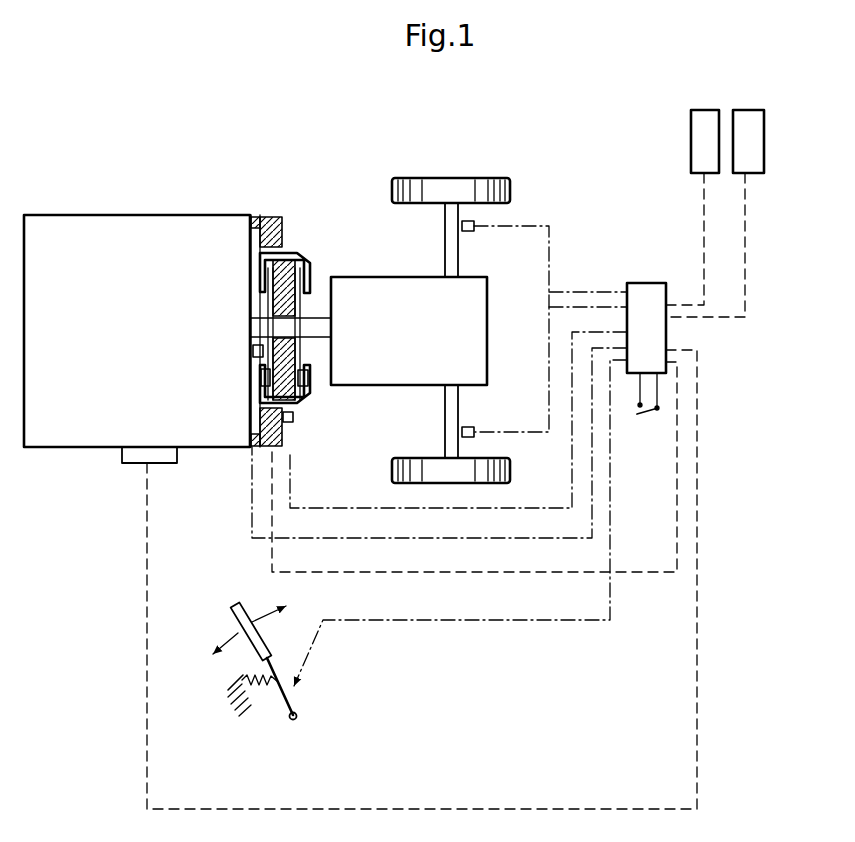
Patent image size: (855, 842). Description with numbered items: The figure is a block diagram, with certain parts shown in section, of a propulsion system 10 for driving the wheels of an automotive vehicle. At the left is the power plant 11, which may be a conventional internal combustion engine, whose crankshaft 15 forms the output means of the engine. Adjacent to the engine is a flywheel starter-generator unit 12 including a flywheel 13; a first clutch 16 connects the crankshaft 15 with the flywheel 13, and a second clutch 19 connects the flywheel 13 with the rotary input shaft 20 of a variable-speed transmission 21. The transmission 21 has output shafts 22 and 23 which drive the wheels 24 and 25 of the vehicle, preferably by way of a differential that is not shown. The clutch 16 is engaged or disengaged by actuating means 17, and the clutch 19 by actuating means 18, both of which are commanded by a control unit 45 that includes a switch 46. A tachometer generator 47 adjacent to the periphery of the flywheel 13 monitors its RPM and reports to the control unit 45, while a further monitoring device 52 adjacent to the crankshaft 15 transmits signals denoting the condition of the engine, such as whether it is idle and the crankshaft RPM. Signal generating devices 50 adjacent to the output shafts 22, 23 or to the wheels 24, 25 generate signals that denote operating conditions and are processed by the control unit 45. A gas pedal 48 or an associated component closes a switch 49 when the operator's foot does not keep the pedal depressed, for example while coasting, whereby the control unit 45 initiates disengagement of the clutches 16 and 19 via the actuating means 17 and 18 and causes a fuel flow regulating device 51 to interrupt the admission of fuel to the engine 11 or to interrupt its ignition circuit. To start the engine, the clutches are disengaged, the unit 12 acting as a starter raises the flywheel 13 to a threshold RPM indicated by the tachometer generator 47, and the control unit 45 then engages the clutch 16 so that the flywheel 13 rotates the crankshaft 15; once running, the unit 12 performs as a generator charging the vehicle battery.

The propulsion system 10 is at (353, 155).
The power plant 11 is at (88, 291).
The flywheel starter-generator unit 12 is at (312, 248).
The flywheel 13 is at (289, 305).
The crankshaft 15 is at (256, 327).
The first clutch 16 is at (262, 378).
The actuating means 17 is at (703, 137).
The actuating means 18 is at (743, 116).
The second clutch 19 is at (308, 384).
The rotary input shaft 20 is at (318, 331).
The variable-speed transmission 21 is at (413, 321).
The output shaft 22 is at (448, 249).
The output shaft 23 is at (448, 409).
The wheel 24 is at (495, 178).
The wheel 25 is at (510, 470).
The control unit 45 is at (633, 336).
The switch 46 is at (645, 416).
The tachometer generator 47 is at (293, 422).
The gas pedal 48 is at (236, 613).
The switch 49 is at (287, 697).
The signal generating device 50 is at (470, 233).
The fuel flow regulating device 51 is at (171, 455).
The monitoring device 52 is at (253, 351).